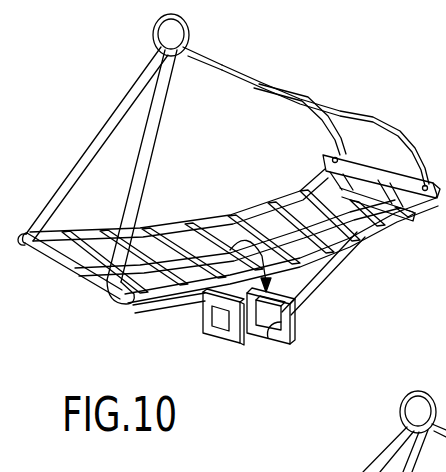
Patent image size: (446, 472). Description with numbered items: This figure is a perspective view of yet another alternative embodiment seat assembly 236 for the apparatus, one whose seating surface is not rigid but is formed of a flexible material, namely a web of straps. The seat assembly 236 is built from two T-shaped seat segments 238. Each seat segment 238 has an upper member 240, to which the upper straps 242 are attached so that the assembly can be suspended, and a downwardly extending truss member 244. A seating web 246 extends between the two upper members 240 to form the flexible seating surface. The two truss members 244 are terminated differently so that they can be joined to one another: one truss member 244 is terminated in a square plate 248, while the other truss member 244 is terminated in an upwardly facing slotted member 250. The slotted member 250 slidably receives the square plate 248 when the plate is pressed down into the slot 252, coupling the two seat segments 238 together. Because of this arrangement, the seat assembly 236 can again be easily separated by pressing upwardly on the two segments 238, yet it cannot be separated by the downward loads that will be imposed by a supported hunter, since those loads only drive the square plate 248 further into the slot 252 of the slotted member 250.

The seat assembly 236 is at (284, 80).
The T-shaped seat segment 238 is at (345, 245).
The upper member 240 is at (408, 146).
The upper strap 242 is at (78, 160).
The truss member 244 is at (323, 271).
The seating web 246 is at (225, 217).
The square plate 248 is at (225, 340).
The slotted member 250 is at (292, 323).
The slot 252 is at (268, 338).